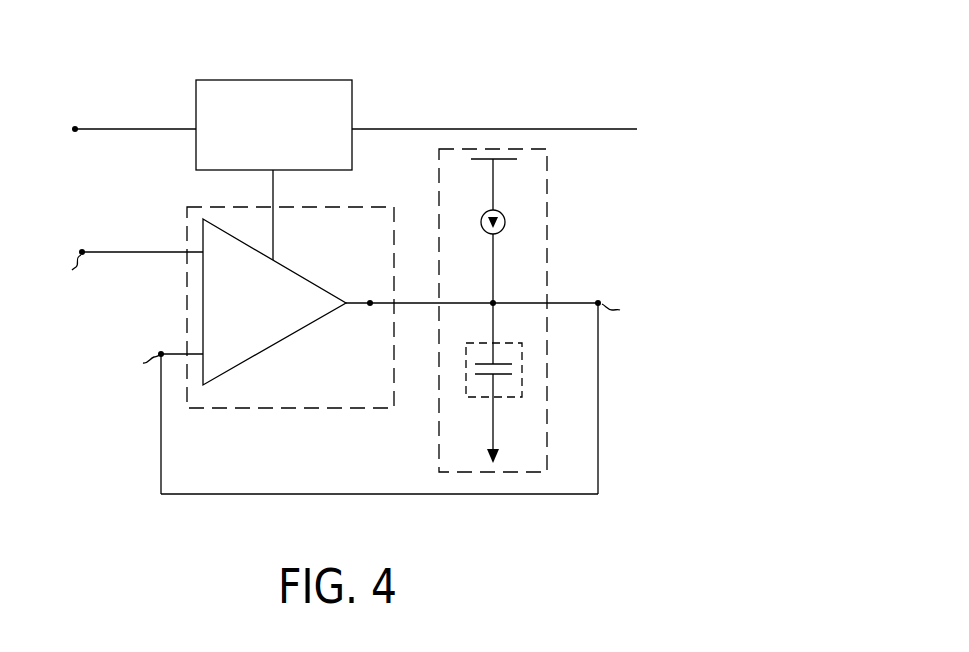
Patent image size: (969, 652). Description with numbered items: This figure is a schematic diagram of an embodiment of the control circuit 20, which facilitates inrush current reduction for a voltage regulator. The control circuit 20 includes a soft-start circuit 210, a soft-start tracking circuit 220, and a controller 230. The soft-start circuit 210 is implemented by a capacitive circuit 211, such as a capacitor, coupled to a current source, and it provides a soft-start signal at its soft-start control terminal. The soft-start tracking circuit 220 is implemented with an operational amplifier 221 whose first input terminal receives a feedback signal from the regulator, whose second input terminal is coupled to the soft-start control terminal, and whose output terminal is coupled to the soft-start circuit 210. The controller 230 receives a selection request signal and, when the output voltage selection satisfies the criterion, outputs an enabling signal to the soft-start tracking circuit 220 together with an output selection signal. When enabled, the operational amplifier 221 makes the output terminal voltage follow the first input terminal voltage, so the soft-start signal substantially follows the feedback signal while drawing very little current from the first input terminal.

The control circuit 20 is at (660, 35).
The controller 230 is at (352, 98).
The soft-start tracking circuit 220 is at (290, 330).
The operational amplifier 221 is at (307, 279).
The soft-start circuit 210 is at (530, 310).
The capacitive circuit 211 is at (502, 398).